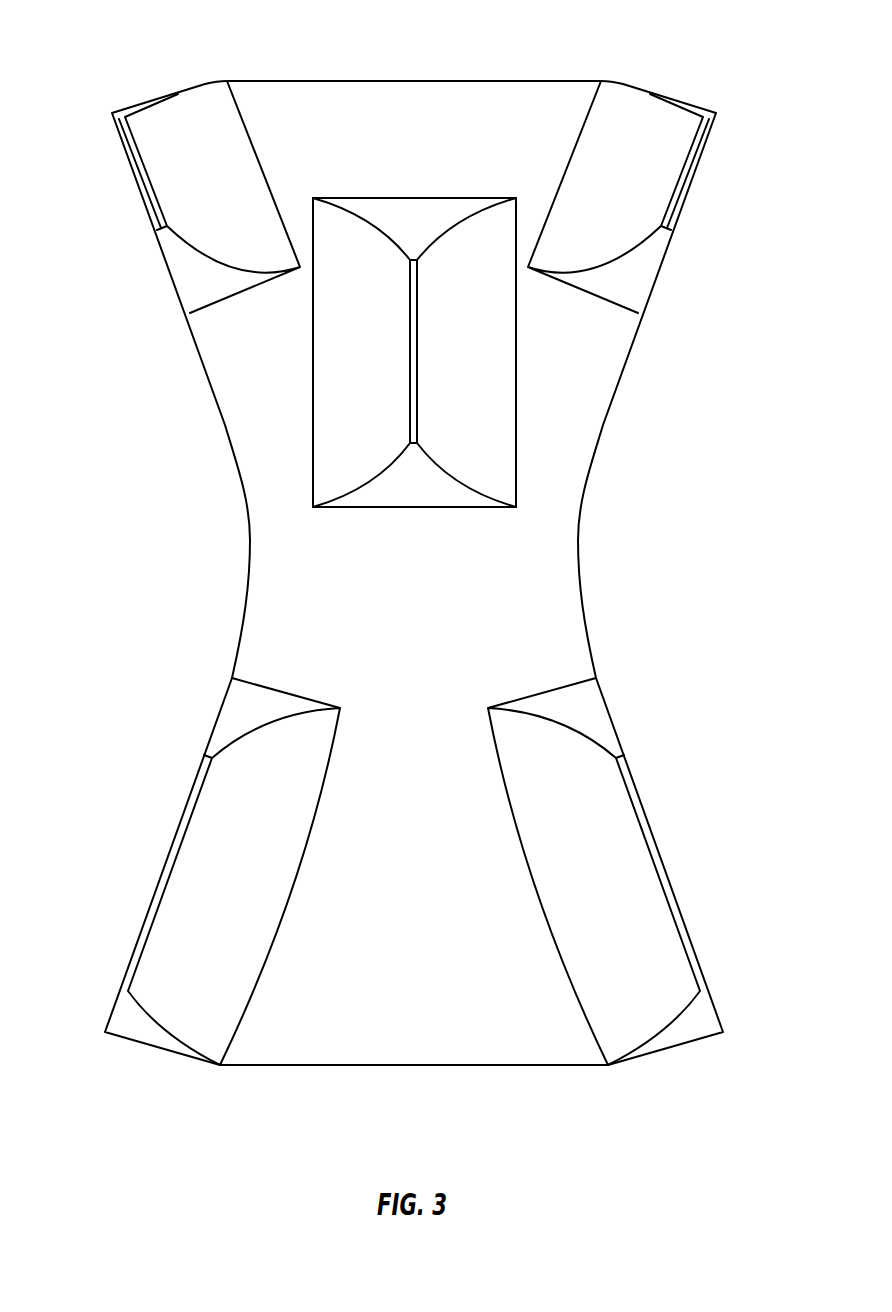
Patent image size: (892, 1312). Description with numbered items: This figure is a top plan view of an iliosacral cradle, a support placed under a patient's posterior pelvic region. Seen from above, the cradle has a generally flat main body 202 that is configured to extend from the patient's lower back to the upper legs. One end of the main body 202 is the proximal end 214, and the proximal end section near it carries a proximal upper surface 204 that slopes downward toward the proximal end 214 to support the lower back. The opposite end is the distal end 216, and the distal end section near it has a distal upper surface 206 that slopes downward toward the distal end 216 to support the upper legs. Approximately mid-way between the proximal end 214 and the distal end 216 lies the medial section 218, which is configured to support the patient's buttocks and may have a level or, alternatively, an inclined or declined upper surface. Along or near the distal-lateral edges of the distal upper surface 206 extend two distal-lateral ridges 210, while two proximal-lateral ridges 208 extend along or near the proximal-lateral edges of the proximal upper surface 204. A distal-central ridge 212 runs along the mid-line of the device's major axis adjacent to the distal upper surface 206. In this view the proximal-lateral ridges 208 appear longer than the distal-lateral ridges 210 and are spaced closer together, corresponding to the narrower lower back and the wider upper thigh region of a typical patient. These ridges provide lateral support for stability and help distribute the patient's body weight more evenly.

The main body 202 is at (431, 615).
The proximal upper surface 204 is at (373, 1013).
The distal upper surface 206 is at (383, 110).
The proximal-lateral ridges 208 is at (223, 838).
The distal-lateral ridges 210 is at (165, 125).
The distal-central ridge 212 is at (440, 212).
The proximal end 214 is at (438, 1066).
The distal end 216 is at (455, 82).
The medial section 218 is at (622, 420).